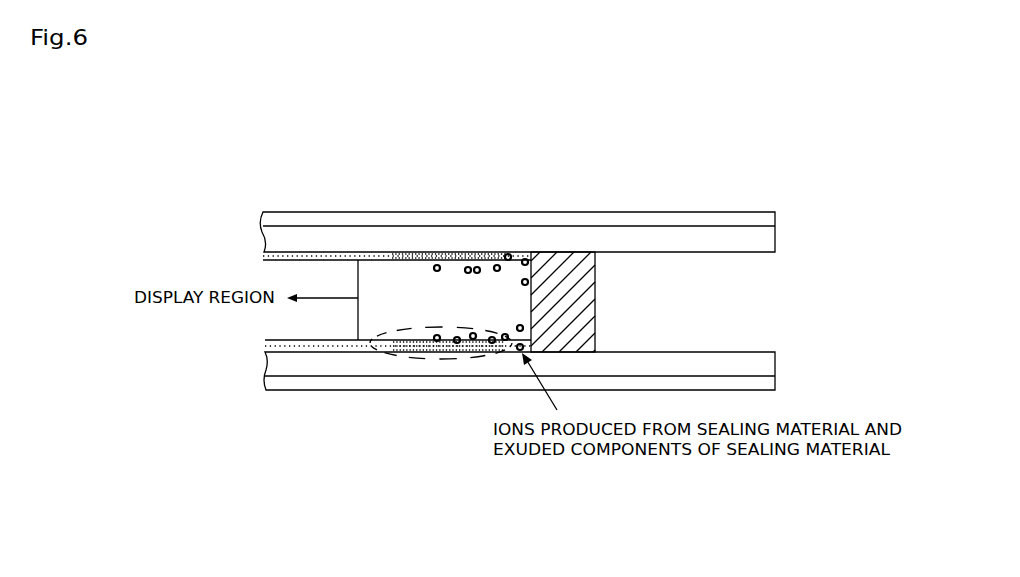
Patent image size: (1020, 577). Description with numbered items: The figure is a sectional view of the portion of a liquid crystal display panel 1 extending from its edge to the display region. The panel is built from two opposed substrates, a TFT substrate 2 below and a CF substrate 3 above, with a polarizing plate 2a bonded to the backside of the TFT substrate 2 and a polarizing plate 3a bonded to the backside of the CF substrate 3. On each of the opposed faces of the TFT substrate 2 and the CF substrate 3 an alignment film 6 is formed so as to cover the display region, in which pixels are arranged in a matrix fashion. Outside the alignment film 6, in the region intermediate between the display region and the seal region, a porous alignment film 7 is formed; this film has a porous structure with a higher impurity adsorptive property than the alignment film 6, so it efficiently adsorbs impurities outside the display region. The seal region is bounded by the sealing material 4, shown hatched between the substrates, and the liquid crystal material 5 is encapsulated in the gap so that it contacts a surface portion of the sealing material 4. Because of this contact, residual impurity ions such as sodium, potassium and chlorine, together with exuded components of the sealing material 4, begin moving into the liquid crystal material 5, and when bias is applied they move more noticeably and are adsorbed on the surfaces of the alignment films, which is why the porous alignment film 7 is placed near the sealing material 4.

The liquid crystal display panel 1 is at (692, 82).
The TFT substrate 2 is at (287, 362).
The polarizing plate 2a is at (267, 380).
The CF substrate 3 is at (273, 234).
The polarizing plate 3a is at (267, 215).
The sealing material 4 is at (568, 304).
The liquid crystal material 5 is at (492, 302).
The alignment film 6 is at (320, 253).
The porous alignment film 7 is at (423, 253).